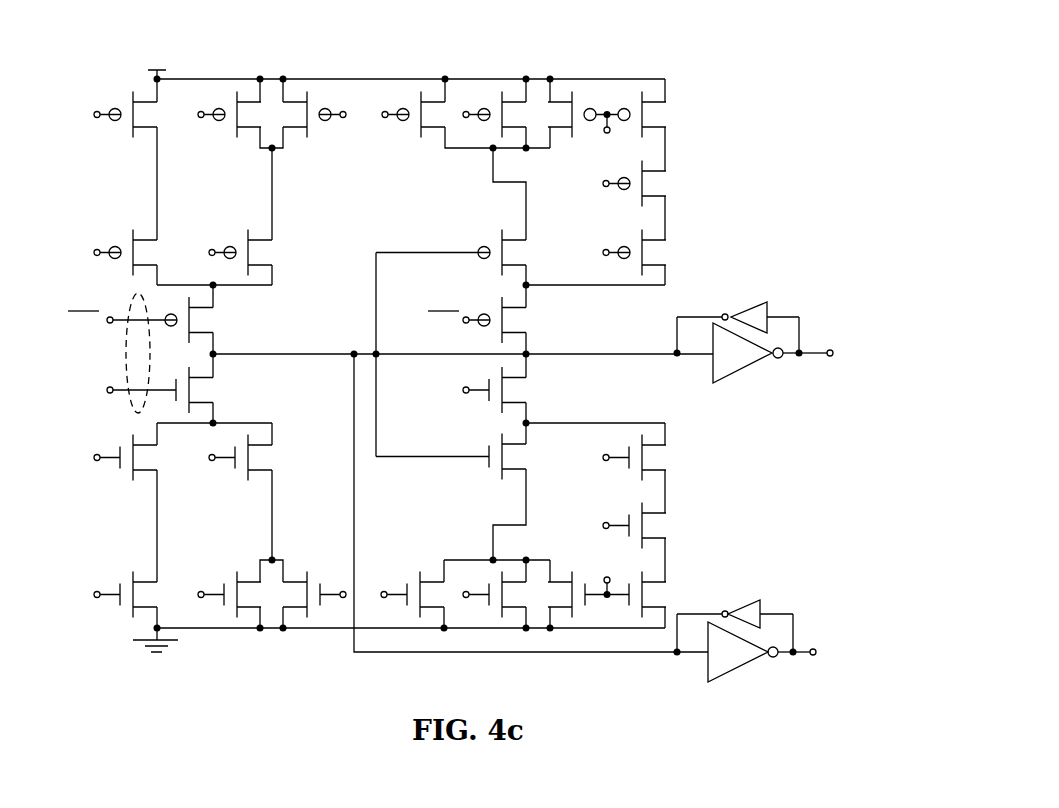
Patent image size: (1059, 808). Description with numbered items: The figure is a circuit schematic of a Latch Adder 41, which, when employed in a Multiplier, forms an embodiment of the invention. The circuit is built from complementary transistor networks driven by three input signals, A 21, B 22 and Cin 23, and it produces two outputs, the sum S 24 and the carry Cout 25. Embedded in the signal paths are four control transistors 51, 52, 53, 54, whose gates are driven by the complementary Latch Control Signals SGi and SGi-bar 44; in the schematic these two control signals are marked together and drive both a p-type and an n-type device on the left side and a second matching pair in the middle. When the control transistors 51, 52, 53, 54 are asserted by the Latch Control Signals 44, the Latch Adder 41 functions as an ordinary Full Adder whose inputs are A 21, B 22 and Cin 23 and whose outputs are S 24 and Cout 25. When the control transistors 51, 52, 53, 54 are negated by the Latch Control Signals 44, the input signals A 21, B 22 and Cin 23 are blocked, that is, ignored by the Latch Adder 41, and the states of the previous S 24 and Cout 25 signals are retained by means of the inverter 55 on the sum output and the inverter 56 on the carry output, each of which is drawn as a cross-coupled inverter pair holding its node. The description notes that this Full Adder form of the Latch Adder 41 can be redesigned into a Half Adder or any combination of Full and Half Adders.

The input A 21 is at (77, 126).
The input B 22 is at (77, 260).
The input Cin 23 is at (193, 475).
The output S 24 is at (850, 347).
The output Cout 25 is at (850, 638).
The Latch Adder 41 is at (687, 56).
The Latch Control Signals SGi and SGi-bar 44 is at (133, 408).
The control transistor 51 is at (218, 320).
The control transistor 52 is at (222, 385).
The control transistor 53 is at (528, 319).
The control transistor 54 is at (530, 384).
The inverter 55 is at (767, 300).
The inverter 56 is at (760, 600).